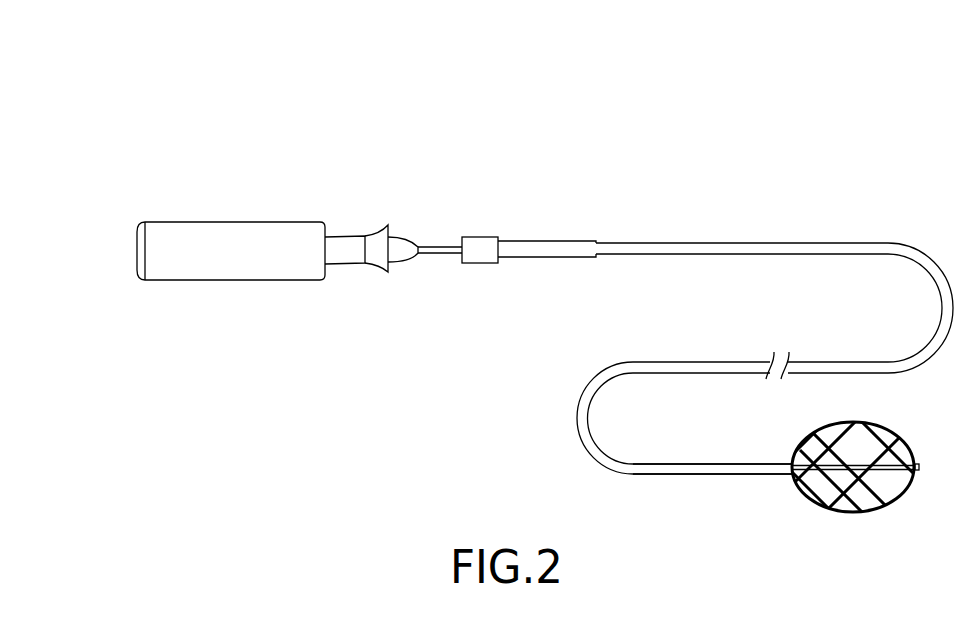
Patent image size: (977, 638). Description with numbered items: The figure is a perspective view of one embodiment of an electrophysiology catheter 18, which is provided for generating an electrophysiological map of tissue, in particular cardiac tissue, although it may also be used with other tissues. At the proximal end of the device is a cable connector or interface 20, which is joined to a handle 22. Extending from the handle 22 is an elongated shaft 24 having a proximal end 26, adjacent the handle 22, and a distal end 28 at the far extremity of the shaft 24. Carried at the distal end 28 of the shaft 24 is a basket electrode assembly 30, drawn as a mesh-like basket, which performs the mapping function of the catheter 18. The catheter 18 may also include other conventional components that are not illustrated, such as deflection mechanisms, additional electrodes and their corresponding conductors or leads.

The electrophysiology catheter 18 is at (343, 132).
The cable connector or interface 20 is at (140, 250).
The handle 22 is at (278, 240).
The shaft 24 is at (838, 243).
The proximal end 26 is at (602, 239).
The distal end 28 is at (734, 489).
The basket electrode assembly 30 is at (907, 440).